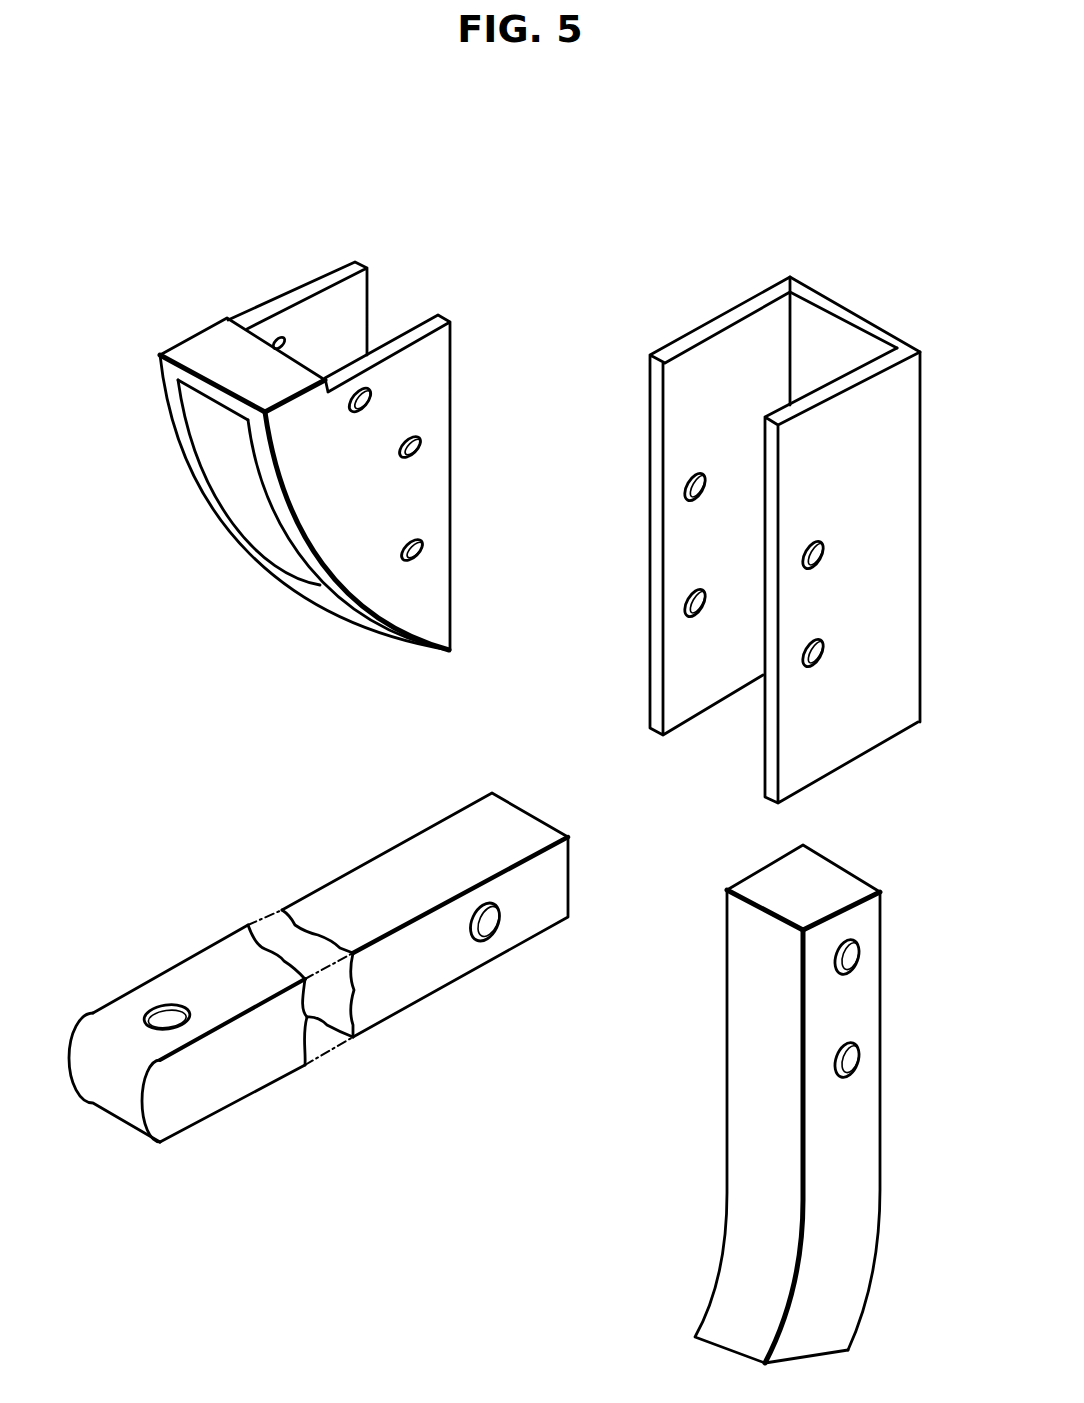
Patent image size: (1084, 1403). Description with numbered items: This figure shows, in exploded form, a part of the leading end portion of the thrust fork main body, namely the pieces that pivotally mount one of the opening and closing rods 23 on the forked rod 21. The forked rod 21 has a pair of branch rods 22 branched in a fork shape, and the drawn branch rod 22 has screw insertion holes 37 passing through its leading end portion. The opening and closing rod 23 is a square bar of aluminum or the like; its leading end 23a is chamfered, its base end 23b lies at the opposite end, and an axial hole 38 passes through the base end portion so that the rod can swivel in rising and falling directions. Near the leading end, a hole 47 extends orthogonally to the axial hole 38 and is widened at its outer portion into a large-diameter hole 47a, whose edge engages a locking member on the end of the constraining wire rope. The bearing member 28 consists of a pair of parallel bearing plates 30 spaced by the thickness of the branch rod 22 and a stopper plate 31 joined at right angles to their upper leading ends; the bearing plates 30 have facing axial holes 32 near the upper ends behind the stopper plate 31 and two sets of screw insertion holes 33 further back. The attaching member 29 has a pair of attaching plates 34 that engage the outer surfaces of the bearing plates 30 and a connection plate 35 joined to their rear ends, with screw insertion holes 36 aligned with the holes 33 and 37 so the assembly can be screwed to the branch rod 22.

The forked rod 21 is at (782, 1104).
The branch rod 22 is at (735, 1067).
The opening and closing rod 23 is at (330, 980).
The leading end 23a is at (127, 1102).
The base end 23b is at (517, 830).
The bearing member 28 is at (328, 418).
The attaching member 29 is at (752, 516).
The bearing plate 30 is at (198, 490).
The stopper plate 31 is at (212, 348).
The axial hole 32 is at (278, 338).
The screw insertion hole 33 is at (423, 444).
The attaching plate 34 is at (665, 352).
The connection plate 35 is at (862, 315).
The screw insertion hole 36 is at (681, 488).
The screw insertion hole 37 is at (860, 954).
The axial hole 38 is at (487, 937).
The hole 47 is at (170, 1012).
The large-diameter hole 47a is at (158, 1014).